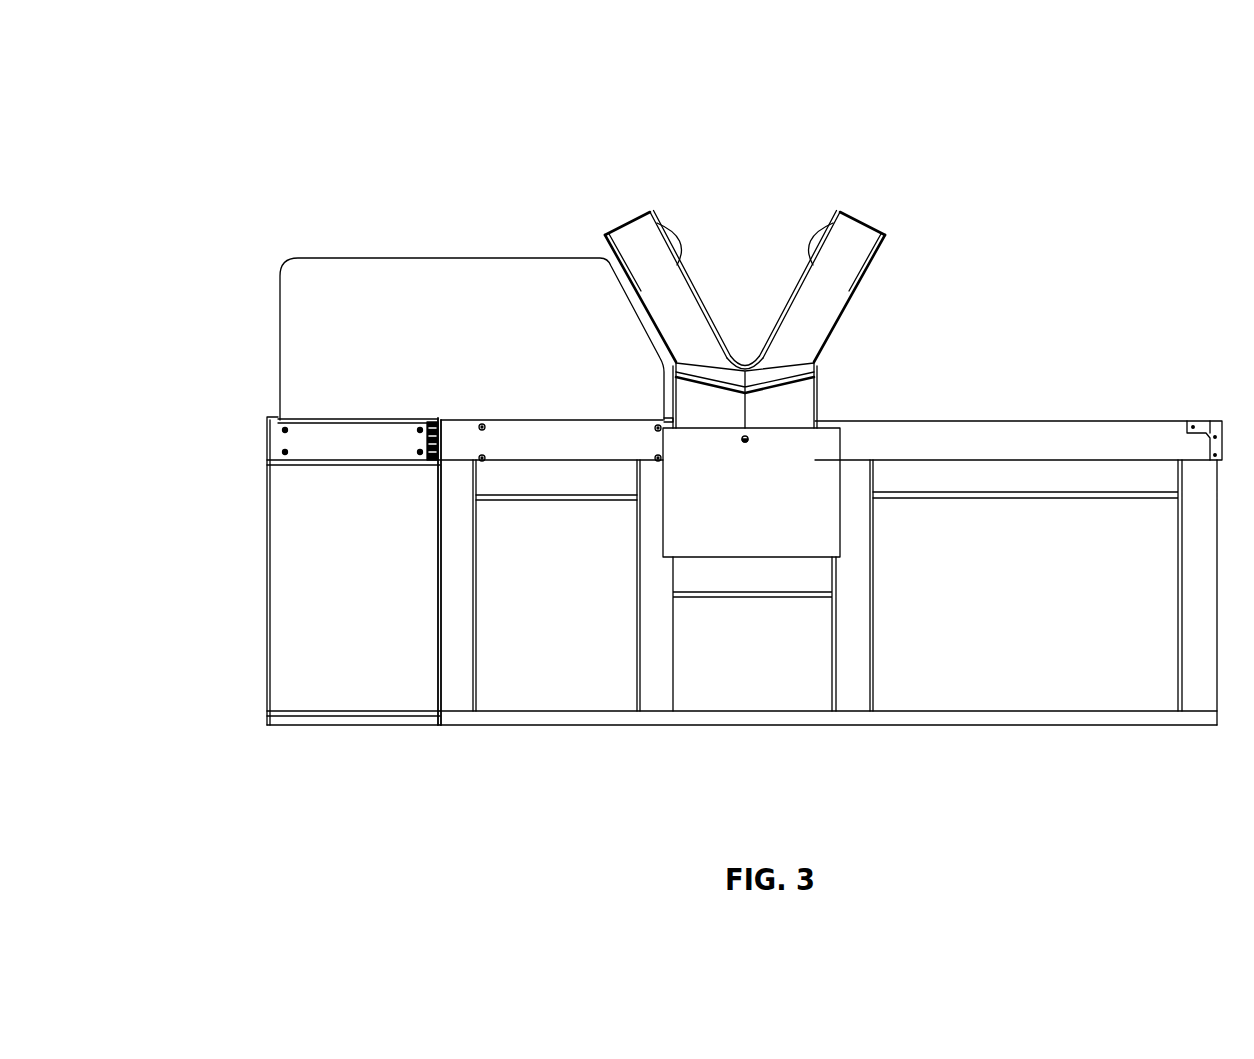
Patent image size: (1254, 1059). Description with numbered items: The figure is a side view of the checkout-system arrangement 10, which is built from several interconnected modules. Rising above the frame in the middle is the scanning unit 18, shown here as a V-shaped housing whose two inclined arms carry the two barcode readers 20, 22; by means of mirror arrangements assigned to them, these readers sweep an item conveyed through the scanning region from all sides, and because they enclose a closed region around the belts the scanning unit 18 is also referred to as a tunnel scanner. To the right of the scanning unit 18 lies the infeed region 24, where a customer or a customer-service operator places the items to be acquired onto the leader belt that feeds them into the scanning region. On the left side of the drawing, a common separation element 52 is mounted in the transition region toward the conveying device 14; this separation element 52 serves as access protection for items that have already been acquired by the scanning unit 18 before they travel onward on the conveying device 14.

The checkout-system arrangement 10 is at (672, 403).
The conveying device 14 is at (202, 410).
The scanning unit 18 is at (750, 254).
The barcode reader 20 is at (633, 238).
The barcode reader 22 is at (860, 232).
The infeed region 24 is at (1040, 387).
The separation element 52 is at (472, 341).